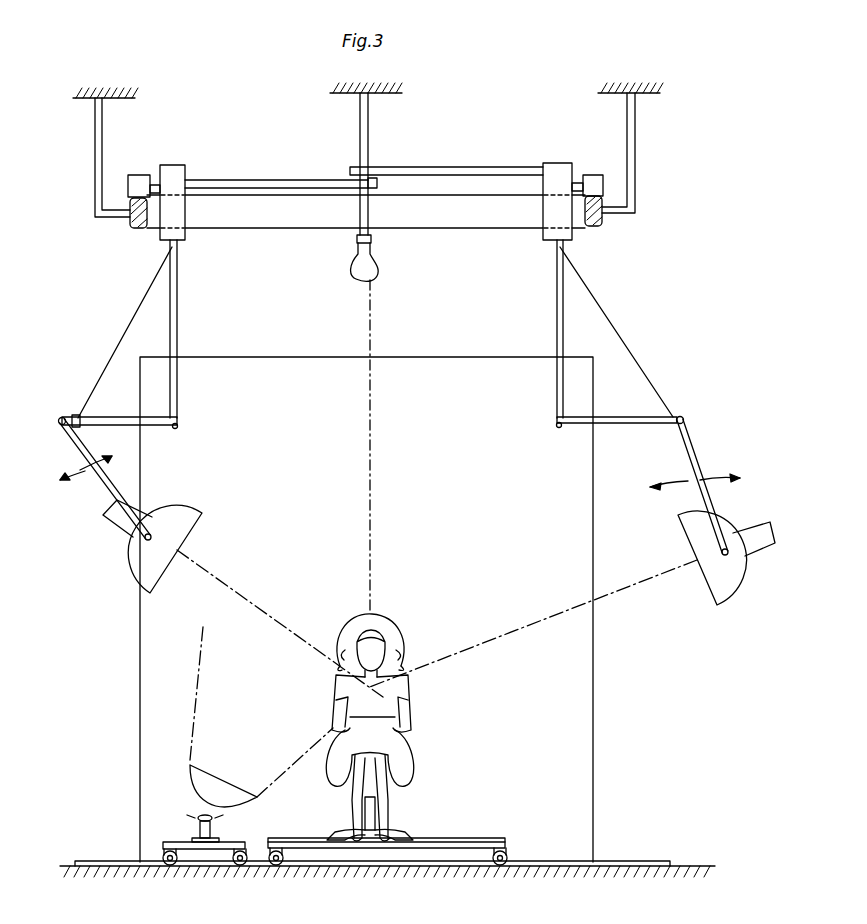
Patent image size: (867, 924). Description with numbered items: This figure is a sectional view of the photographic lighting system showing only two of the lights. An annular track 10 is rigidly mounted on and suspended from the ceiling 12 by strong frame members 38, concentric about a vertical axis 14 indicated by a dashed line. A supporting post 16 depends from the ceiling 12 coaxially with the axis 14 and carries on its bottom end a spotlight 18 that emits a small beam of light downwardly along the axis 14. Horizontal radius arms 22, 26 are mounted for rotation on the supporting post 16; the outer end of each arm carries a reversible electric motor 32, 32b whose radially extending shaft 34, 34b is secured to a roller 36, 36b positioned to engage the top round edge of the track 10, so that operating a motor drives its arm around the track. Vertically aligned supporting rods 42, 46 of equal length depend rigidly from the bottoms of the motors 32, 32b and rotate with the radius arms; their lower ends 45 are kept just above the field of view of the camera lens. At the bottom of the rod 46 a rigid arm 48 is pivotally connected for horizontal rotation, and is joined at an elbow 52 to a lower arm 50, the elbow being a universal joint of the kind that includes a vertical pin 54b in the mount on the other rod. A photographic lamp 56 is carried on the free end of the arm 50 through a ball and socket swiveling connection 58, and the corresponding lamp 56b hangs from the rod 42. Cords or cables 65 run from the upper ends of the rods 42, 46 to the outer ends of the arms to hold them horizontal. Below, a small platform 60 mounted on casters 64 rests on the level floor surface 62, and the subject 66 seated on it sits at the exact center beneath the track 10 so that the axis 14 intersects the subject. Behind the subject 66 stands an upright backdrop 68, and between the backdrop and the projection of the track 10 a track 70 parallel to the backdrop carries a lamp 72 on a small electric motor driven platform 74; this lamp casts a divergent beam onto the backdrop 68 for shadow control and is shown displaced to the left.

The annular track 10 is at (450, 222).
The ceiling 12 is at (85, 99).
The vertical axis 14 is at (376, 432).
The supporting post 16 is at (358, 133).
The spotlight 18 is at (375, 275).
The radius arm 22 is at (465, 167).
The radius arm 26 is at (258, 180).
The reversible electric motor 32 is at (174, 165).
The reversible electric motor 32b is at (556, 163).
The shaft 34 is at (155, 185).
The shaft 34b is at (575, 183).
The roller 36 is at (137, 175).
The roller 36b is at (588, 175).
The frame members 38 is at (94, 173).
The supporting rod 42 is at (556, 320).
The lower ends of supporting rods 45 is at (180, 425).
The supporting rod 46 is at (178, 322).
The arm 48 is at (111, 417).
The arm 50 is at (83, 452).
The elbow 52 is at (62, 417).
The vertical pin 54b is at (560, 428).
The photographic lamp 56 is at (130, 567).
The photographic lamp 56b is at (731, 577).
The universal swiveling connection 58 is at (165, 508).
The platform 60 is at (455, 838).
The floor surface 62 is at (690, 866).
The casters 64 is at (512, 857).
The cords or cables 65 is at (137, 307).
The subject 66 is at (406, 687).
The backdrop 68 is at (598, 698).
The track 70 is at (95, 865).
The lamp 72 is at (190, 767).
The motor driven platform 74 is at (163, 846).